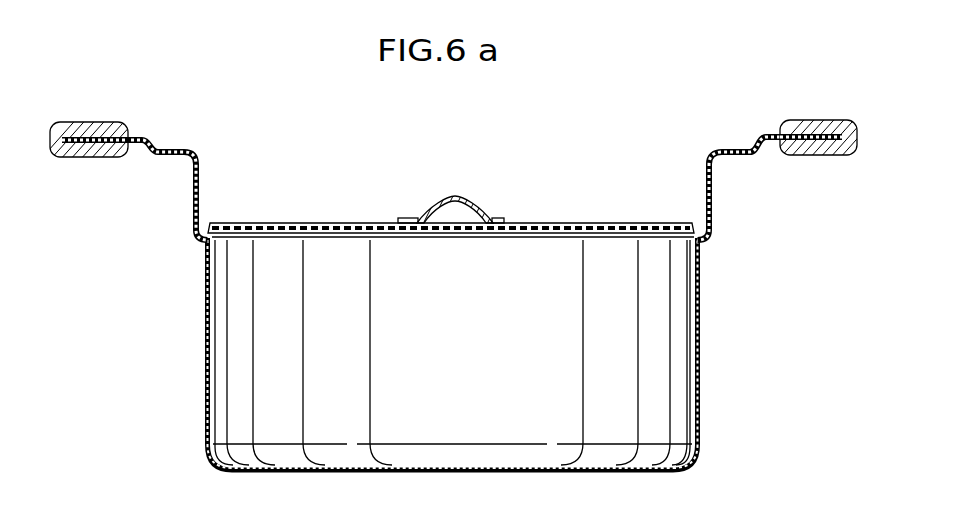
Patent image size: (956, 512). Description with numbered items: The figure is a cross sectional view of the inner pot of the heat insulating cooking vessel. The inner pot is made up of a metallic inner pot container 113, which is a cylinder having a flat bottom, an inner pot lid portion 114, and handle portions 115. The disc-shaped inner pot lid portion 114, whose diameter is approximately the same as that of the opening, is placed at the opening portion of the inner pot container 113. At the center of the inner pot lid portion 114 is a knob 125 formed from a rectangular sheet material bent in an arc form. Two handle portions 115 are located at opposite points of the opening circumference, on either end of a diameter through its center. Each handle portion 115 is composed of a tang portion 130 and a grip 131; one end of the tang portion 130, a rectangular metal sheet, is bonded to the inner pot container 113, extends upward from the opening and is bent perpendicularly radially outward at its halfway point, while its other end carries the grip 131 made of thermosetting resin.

The inner pot container 113 is at (701, 325).
The inner pot lid portion 114 is at (364, 223).
The handle portion 115 is at (147, 154).
The knob 125 is at (450, 197).
The tang portion 130 is at (190, 150).
The grip 131 is at (112, 125).